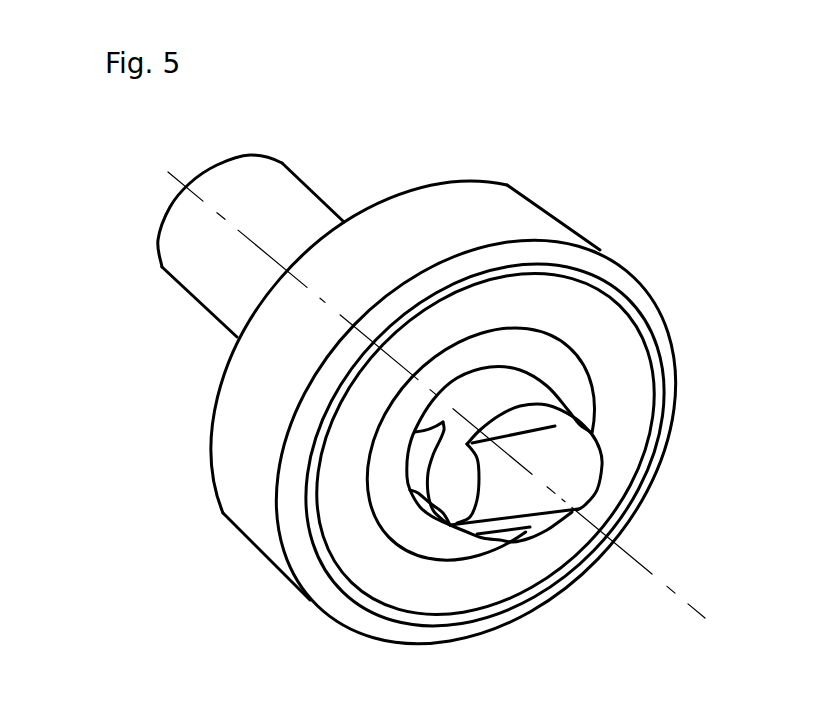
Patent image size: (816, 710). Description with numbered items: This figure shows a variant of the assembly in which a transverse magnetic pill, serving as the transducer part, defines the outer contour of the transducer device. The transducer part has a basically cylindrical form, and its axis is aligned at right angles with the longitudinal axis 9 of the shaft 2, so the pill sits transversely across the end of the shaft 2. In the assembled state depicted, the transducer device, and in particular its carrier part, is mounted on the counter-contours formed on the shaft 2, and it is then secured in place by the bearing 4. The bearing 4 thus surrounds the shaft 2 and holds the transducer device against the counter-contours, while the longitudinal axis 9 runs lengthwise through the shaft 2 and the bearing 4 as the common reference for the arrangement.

The shaft 2 is at (280, 190).
The bearing 4 is at (533, 218).
The longitudinal axis 9 is at (635, 557).